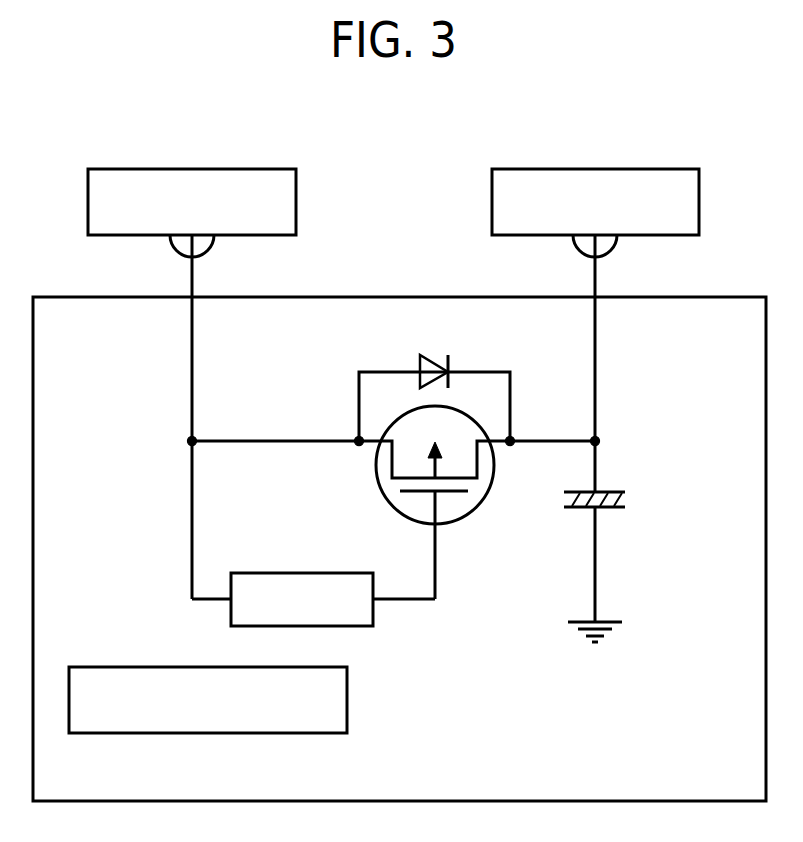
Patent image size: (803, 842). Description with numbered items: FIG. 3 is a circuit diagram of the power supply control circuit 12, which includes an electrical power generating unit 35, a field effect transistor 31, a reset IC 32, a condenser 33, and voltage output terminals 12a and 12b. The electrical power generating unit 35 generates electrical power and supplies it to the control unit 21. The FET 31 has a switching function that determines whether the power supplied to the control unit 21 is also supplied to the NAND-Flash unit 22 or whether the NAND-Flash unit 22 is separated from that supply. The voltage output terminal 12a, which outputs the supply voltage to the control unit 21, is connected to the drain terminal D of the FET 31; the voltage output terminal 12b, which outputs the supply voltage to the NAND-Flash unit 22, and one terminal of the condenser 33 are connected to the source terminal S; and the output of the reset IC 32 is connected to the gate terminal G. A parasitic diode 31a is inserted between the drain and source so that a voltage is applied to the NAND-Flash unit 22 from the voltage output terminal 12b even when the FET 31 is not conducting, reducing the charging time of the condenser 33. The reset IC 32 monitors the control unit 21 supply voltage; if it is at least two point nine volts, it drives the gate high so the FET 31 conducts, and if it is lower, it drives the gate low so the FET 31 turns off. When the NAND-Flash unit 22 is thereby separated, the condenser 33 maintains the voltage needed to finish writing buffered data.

The power supply control circuit 12 is at (373, 296).
The voltage output terminal 12a is at (212, 250).
The voltage output terminal 12b is at (615, 250).
The control unit 21 is at (253, 169).
The NAND-Flash unit 22 is at (655, 169).
The field effect transistor 31 is at (474, 527).
The parasitic diode 31a is at (432, 354).
The reset IC 32 is at (374, 612).
The condenser 33 is at (620, 491).
The electrical power generating unit 35 is at (100, 667).